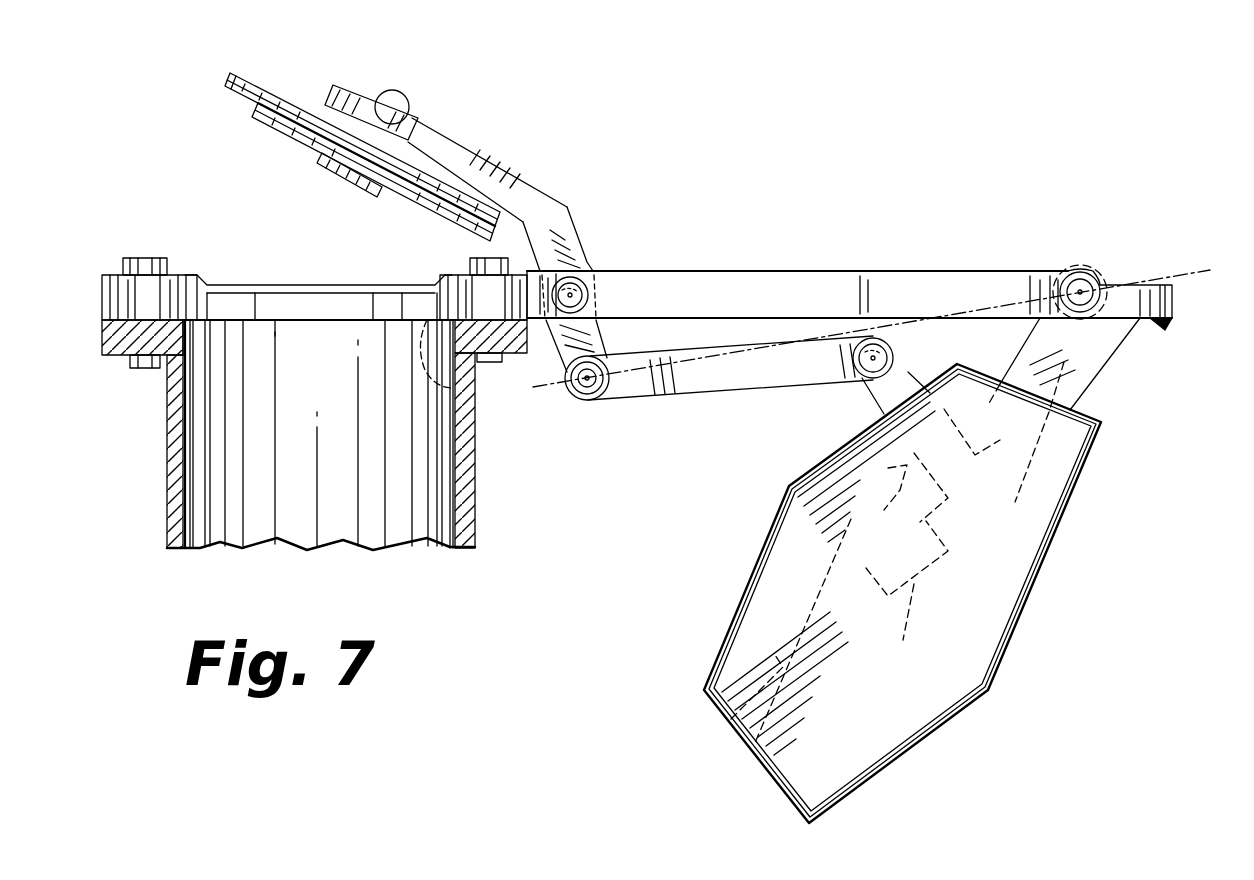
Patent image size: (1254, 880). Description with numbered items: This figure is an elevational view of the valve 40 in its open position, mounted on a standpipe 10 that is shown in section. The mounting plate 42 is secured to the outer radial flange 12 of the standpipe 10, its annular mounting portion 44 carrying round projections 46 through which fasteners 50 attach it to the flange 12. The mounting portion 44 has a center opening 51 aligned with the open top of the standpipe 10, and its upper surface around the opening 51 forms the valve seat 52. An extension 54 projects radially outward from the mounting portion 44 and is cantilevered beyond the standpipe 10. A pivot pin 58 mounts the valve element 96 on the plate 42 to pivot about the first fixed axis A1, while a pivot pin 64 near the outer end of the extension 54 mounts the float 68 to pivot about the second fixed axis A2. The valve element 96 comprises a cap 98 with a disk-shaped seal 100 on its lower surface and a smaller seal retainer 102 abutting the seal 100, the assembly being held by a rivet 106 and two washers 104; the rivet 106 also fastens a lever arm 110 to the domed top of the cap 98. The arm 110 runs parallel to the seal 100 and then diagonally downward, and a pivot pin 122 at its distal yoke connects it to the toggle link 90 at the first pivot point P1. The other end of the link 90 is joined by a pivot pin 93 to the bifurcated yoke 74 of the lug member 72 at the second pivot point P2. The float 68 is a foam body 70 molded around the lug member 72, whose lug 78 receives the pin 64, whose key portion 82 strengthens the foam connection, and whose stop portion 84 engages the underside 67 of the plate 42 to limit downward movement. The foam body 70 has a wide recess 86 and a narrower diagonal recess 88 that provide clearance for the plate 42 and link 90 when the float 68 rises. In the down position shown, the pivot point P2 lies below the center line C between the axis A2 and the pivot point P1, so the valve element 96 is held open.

The standpipe 10 is at (475, 505).
The outer radial flange 12 is at (105, 356).
The valve 40 is at (700, 218).
The mounting plate 42 is at (1012, 262).
The annular mounting portion 44 is at (326, 322).
The round projections 46 is at (110, 283).
The fastener 50 is at (148, 258).
The center opening 51 is at (487, 392).
The valve seat 52 is at (236, 283).
The extension 54 is at (1160, 285).
The pivot pin 58 is at (585, 282).
The pivot pin 64 is at (1065, 325).
The underside 67 is at (1130, 352).
The float 68 is at (1030, 603).
The foam body 70 is at (928, 735).
The lug member 72 is at (1038, 472).
The bifurcated yoke 74 is at (890, 368).
The lug 78 is at (1077, 275).
The key portion 82 is at (903, 630).
The stop portion 84 is at (1170, 325).
The wide recess 86 is at (905, 524).
The diagonal recess 88 is at (724, 726).
The toggle link 90 is at (812, 376).
The pivot pin 93 is at (874, 338).
The valve element 96 is at (578, 212).
The cap 98 is at (295, 95).
The seal 100 is at (232, 100).
The seal retainer 102 is at (410, 208).
The washers 104 is at (425, 120).
The rivet 106 is at (395, 90).
The lever arm 110 is at (520, 185).
The pivot pin 122 is at (605, 385).
The first fixed axis A1 is at (543, 300).
The second fixed axis A2 is at (1085, 288).
The first pivot point P1 is at (583, 400).
The second pivot point P2 is at (870, 375).
The center line C is at (772, 388).